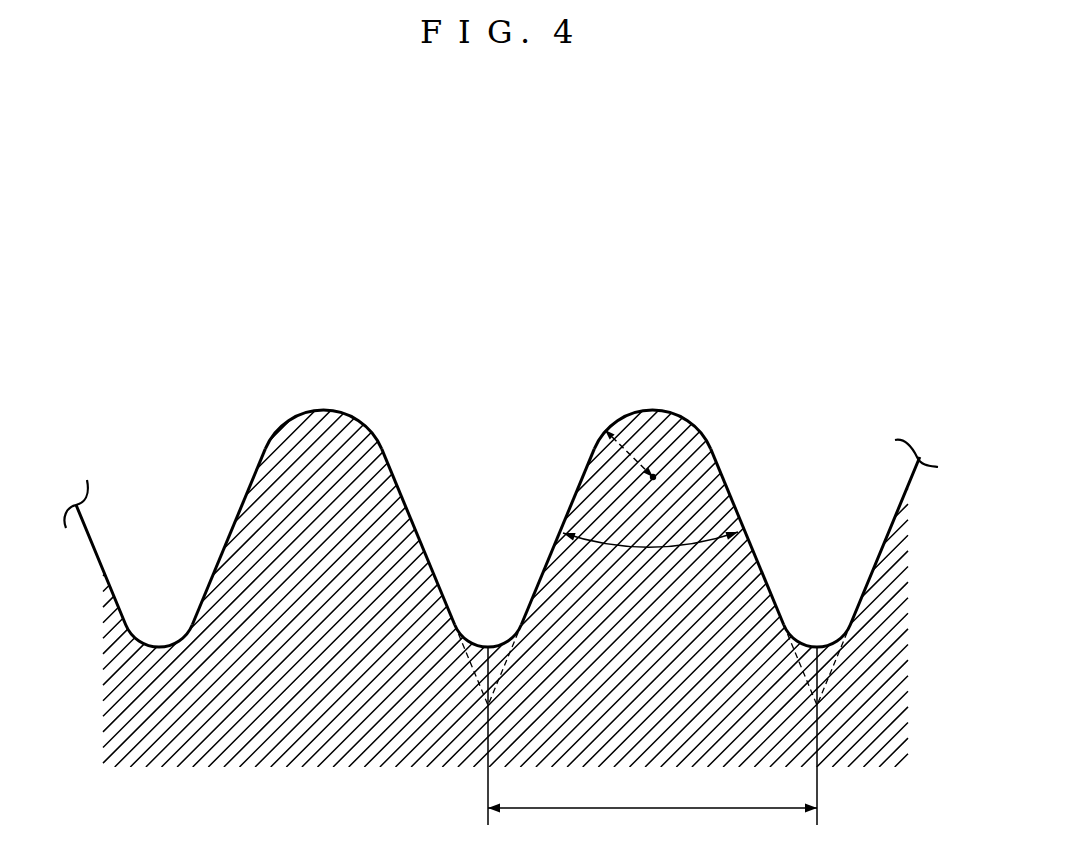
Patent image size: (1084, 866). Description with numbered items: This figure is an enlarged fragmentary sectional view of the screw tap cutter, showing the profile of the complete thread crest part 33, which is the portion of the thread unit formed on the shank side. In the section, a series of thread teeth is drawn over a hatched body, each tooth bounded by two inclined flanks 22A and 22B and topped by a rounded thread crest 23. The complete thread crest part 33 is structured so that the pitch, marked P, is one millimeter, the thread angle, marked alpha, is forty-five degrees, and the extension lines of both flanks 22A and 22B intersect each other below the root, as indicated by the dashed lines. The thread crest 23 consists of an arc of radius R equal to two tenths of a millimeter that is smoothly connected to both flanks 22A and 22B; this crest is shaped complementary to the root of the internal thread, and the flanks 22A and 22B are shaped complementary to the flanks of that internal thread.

The complete thread crest part 33 is at (826, 322).
The thread crest 23 is at (325, 410).
The flank 22A is at (235, 522).
The flank 22B is at (410, 517).